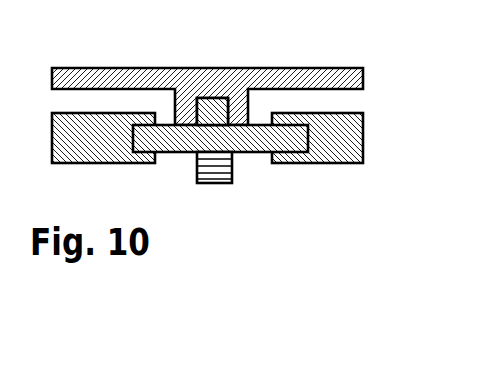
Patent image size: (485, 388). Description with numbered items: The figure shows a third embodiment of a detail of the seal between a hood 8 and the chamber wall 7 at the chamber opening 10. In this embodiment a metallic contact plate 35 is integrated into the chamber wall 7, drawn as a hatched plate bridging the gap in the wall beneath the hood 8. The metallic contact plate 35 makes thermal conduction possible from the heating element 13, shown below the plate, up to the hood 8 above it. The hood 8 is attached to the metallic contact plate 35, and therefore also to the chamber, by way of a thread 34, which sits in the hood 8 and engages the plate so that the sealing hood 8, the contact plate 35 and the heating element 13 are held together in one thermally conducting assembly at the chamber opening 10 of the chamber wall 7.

The chamber wall 7 is at (363, 142).
The hood 8 is at (363, 82).
The chamber opening 10 is at (272, 162).
The heating element 13 is at (232, 183).
The thread 34 is at (198, 111).
The metallic contact plate 35 is at (172, 152).